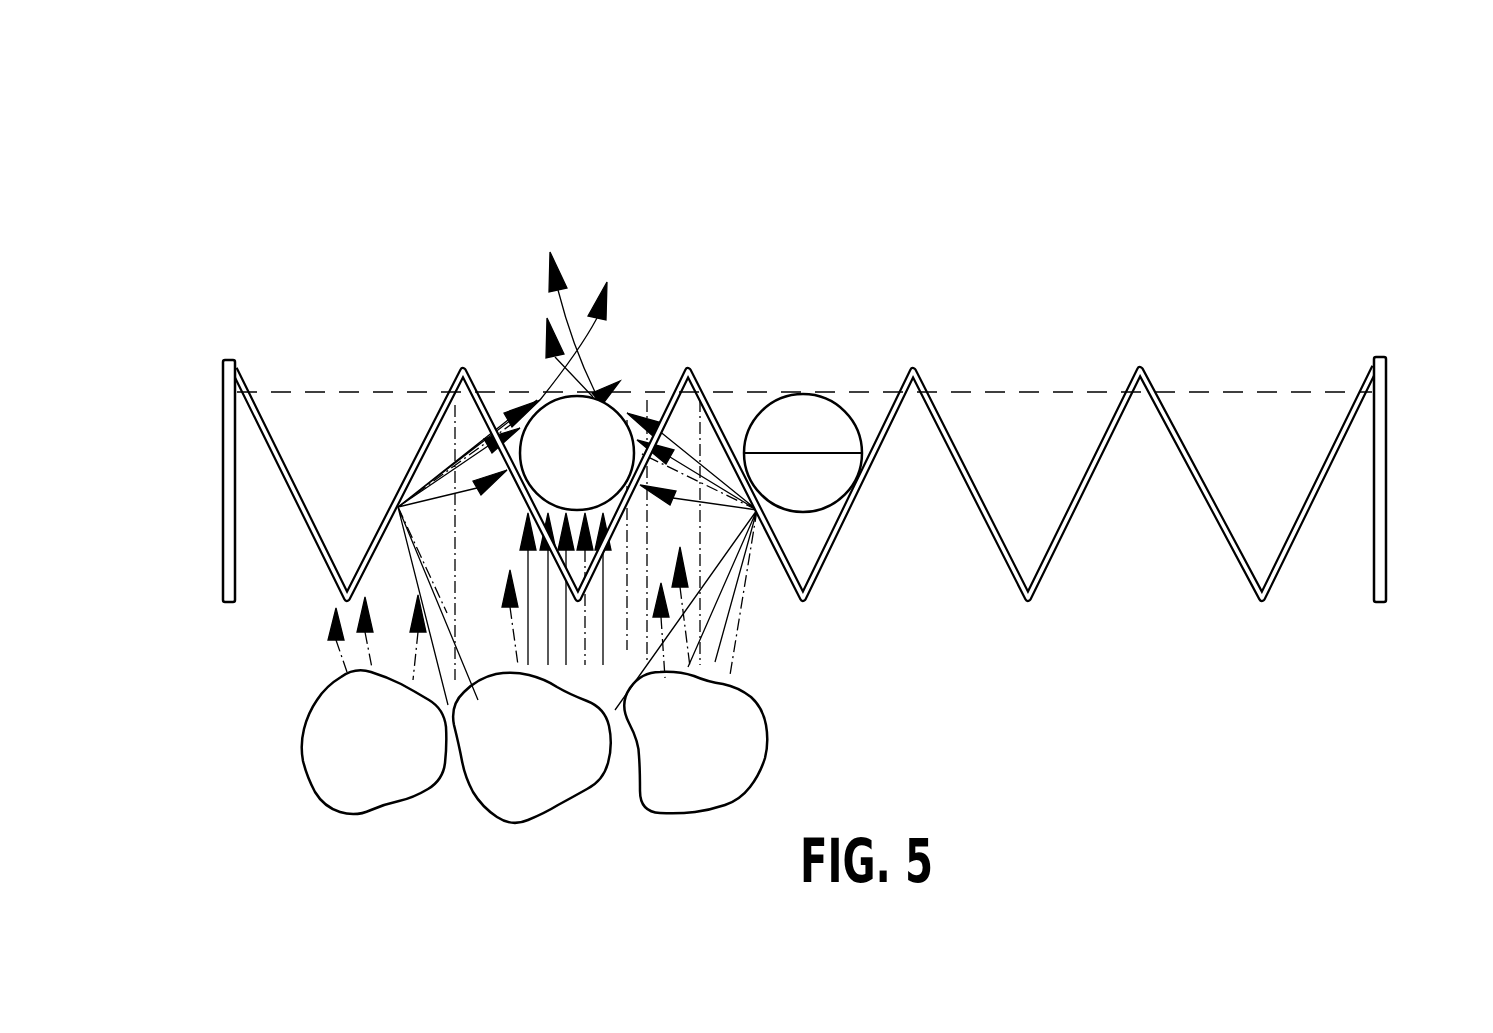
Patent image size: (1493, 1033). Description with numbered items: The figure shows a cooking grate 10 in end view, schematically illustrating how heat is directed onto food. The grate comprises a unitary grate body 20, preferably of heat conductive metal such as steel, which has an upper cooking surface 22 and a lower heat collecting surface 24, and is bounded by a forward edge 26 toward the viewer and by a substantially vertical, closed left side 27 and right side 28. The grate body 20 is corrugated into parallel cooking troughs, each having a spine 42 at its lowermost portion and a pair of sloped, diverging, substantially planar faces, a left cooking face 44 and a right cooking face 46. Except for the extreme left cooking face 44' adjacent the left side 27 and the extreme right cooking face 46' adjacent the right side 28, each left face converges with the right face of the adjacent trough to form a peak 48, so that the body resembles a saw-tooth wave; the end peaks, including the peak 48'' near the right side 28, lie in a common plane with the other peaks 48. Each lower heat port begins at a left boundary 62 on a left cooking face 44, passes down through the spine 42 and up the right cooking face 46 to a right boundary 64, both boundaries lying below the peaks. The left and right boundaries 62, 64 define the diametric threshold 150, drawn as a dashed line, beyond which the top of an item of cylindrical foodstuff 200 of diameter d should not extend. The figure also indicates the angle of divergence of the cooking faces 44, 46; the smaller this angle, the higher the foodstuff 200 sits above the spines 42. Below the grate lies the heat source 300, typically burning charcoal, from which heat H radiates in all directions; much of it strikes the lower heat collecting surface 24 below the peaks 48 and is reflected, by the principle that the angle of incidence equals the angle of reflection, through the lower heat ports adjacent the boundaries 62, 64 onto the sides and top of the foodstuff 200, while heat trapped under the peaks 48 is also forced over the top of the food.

The cooking grate 10 is at (398, 140).
The grate body 20 is at (1402, 522).
The upper cooking surface 22 is at (1095, 416).
The lower heat collecting surface 24 is at (1199, 532).
The forward edge 26 is at (343, 600).
The left side 27 is at (223, 457).
The right side 28 is at (1387, 477).
The spine 42 is at (1030, 604).
The left cooking face 44 is at (990, 410).
The extreme left cooking face 44' is at (312, 430).
The right cooking face 46 is at (723, 404).
The extreme right cooking face 46' is at (1311, 386).
The peak 48 is at (801, 323).
The peak 48'' is at (1420, 334).
The left boundary 62 is at (248, 388).
The right boundary 64 is at (447, 387).
The diametric threshold 150 is at (836, 392).
The cylindrical foodstuff 200 is at (797, 420).
The heat source 300 is at (757, 731).
The heat H is at (760, 654).
The diameter d is at (803, 473).